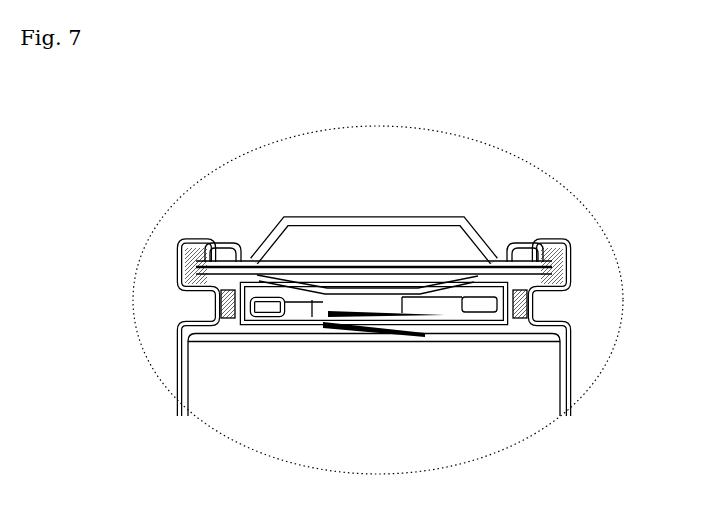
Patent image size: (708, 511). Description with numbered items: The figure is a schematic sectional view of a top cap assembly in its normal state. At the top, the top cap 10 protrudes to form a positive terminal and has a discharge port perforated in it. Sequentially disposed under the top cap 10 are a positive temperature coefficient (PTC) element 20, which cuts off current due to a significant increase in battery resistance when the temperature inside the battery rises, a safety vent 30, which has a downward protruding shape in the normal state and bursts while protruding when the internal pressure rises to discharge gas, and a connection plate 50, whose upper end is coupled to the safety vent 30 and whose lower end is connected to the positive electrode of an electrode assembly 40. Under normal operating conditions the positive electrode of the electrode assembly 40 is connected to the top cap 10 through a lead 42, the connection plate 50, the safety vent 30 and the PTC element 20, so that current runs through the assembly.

The top cap 10 is at (382, 215).
The positive temperature coefficient (PTC) element 20 is at (465, 218).
The safety vent 30 is at (285, 224).
The electrode assembly 40 is at (525, 397).
The lead 42 is at (371, 335).
The connection plate 50 is at (317, 298).